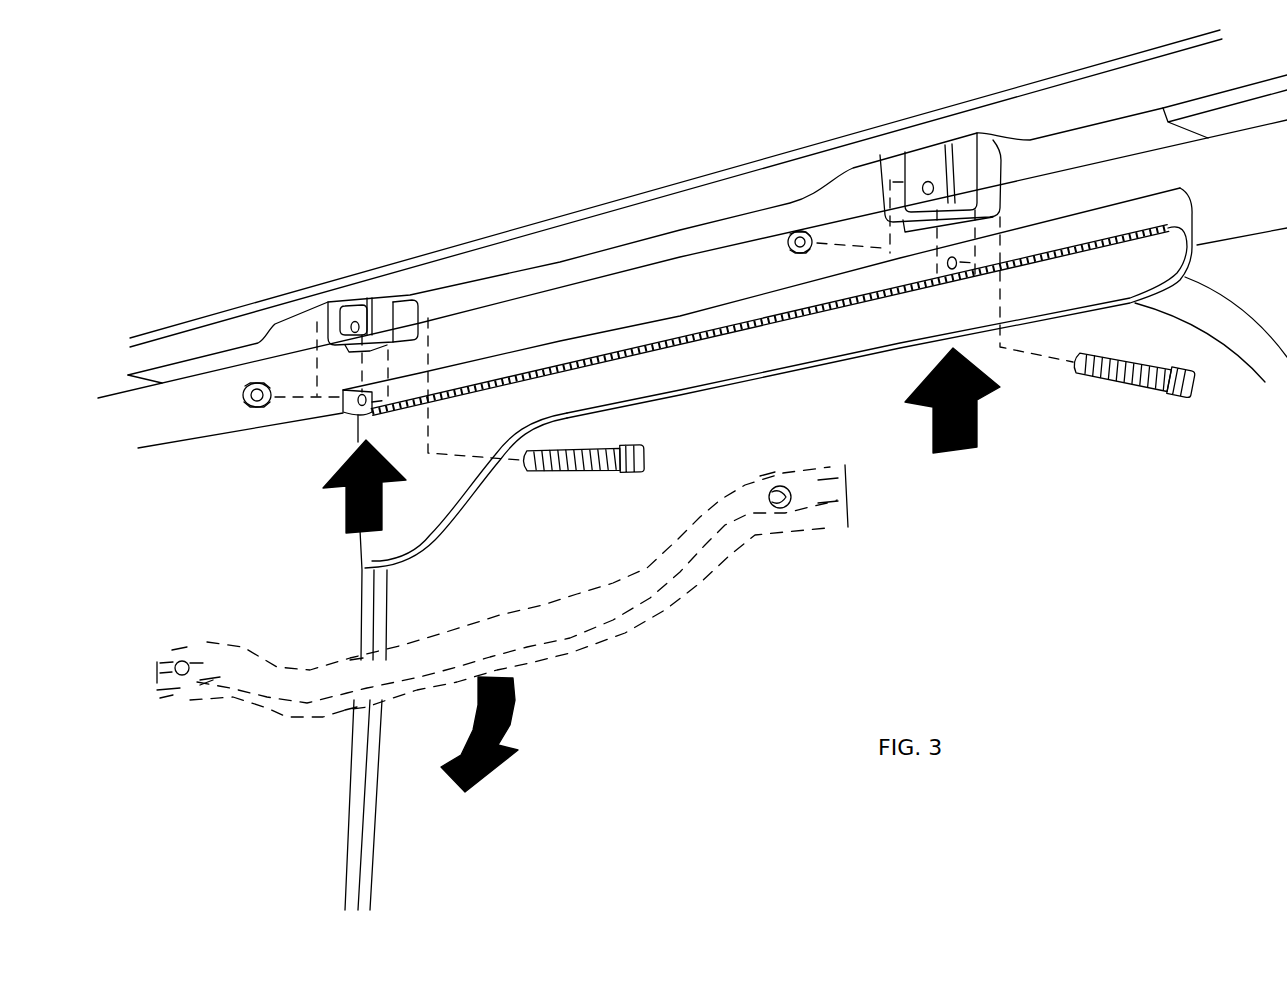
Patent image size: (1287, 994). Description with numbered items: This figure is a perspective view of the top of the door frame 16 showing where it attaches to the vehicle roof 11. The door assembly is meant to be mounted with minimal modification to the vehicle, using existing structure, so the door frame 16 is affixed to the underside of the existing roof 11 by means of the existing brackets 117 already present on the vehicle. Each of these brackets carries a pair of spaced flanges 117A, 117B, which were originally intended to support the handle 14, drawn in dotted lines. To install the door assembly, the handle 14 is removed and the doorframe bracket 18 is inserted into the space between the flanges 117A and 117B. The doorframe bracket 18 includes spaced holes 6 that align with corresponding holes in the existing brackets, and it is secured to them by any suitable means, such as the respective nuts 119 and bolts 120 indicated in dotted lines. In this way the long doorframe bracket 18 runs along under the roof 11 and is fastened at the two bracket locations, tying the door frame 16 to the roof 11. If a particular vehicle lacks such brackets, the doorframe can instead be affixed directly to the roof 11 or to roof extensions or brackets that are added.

The opening 6 is at (343, 415).
The roof 11 is at (606, 200).
The handle 14 is at (598, 619).
The door frame 16 is at (363, 603).
The doorframe bracket 18 is at (780, 362).
The bracket 117 is at (963, 153).
The flange 117A is at (378, 300).
The flange 117B is at (990, 157).
The nut 119 is at (247, 405).
The bolt 120 is at (593, 472).